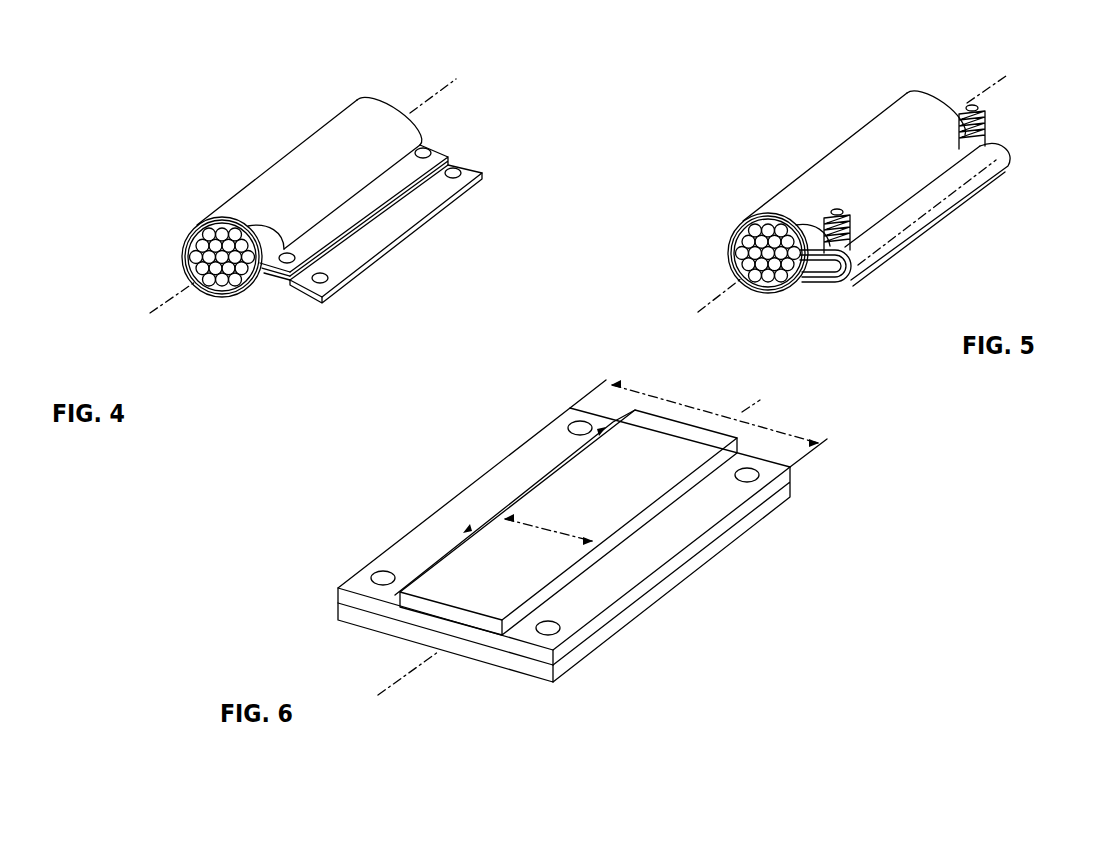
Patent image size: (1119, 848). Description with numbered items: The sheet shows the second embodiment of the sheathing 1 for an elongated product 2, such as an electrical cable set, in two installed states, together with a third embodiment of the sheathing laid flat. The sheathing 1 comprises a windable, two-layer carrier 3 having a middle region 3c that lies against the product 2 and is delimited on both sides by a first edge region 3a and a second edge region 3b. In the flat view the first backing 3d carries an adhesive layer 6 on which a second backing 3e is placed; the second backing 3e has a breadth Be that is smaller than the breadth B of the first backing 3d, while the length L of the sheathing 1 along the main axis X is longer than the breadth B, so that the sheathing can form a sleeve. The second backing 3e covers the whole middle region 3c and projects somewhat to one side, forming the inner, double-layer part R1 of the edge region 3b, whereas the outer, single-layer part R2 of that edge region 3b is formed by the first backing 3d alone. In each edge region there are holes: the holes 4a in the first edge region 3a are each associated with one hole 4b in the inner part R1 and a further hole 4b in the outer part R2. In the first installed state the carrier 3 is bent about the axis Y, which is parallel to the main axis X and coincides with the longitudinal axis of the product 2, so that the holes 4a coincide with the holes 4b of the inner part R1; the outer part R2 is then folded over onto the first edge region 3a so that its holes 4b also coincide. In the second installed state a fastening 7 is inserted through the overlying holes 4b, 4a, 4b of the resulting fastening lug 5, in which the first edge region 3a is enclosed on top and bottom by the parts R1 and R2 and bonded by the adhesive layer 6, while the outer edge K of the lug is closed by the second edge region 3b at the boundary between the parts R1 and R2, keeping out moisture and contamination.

In FIG. 4, the sheathing 1 is at (318, 147).
In FIG. 5, the sheathing 1 is at (864, 141).
In FIG. 4, the elongated product 2 is at (212, 261).
In FIG. 5, the elongated product 2 is at (755, 259).
In FIG. 4, the carrier 3 is at (245, 296).
In FIG. 5, the carrier 3 is at (790, 298).
In FIG. 6, the carrier 3 is at (413, 612).
In FIG. 4, the edge region 3a is at (404, 164).
In FIG. 5, the edge region 3a is at (818, 288).
In FIG. 6, the edge region 3a is at (348, 612).
In FIG. 4, the edge region 3b is at (318, 298).
In FIG. 5, the edge region 3b is at (812, 292).
In FIG. 6, the edge region 3b is at (540, 672).
In FIG. 4, the middle region 3c is at (260, 166).
In FIG. 5, the middle region 3c is at (810, 163).
In FIG. 6, the middle region 3c is at (458, 658).
In FIG. 6, the first backing 3d is at (668, 592).
In FIG. 6, the second backing 3e is at (681, 428).
In FIG. 4, the hole 4a is at (426, 150).
In FIG. 6, the hole 4a is at (573, 427).
In FIG. 4, the hole 4b is at (461, 173).
In FIG. 6, the hole 4b is at (750, 472).
In FIG. 4, the fastening lug 5 is at (293, 296).
In FIG. 5, the fastening lug 5 is at (849, 291).
In FIG. 4, the adhesive layer 6 is at (222, 298).
In FIG. 5, the adhesive layer 6 is at (768, 298).
In FIG. 6, the adhesive layer 6 is at (793, 480).
In FIG. 5, the fastening 7 is at (978, 112).
In FIG. 4, the axis Y is at (433, 93).
In FIG. 5, the axis Y is at (983, 94).
In FIG. 6, the main axis X is at (352, 692).
In FIG. 4, the inner part of the edge region R1 is at (269, 283).
In FIG. 4, the outer part of the edge region R2 is at (436, 186).
In FIG. 5, the outer edge K is at (975, 193).
In FIG. 6, the breadth B is at (648, 393).
In FIG. 6, the breadth Be is at (516, 516).
In FIG. 6, the length L is at (462, 532).